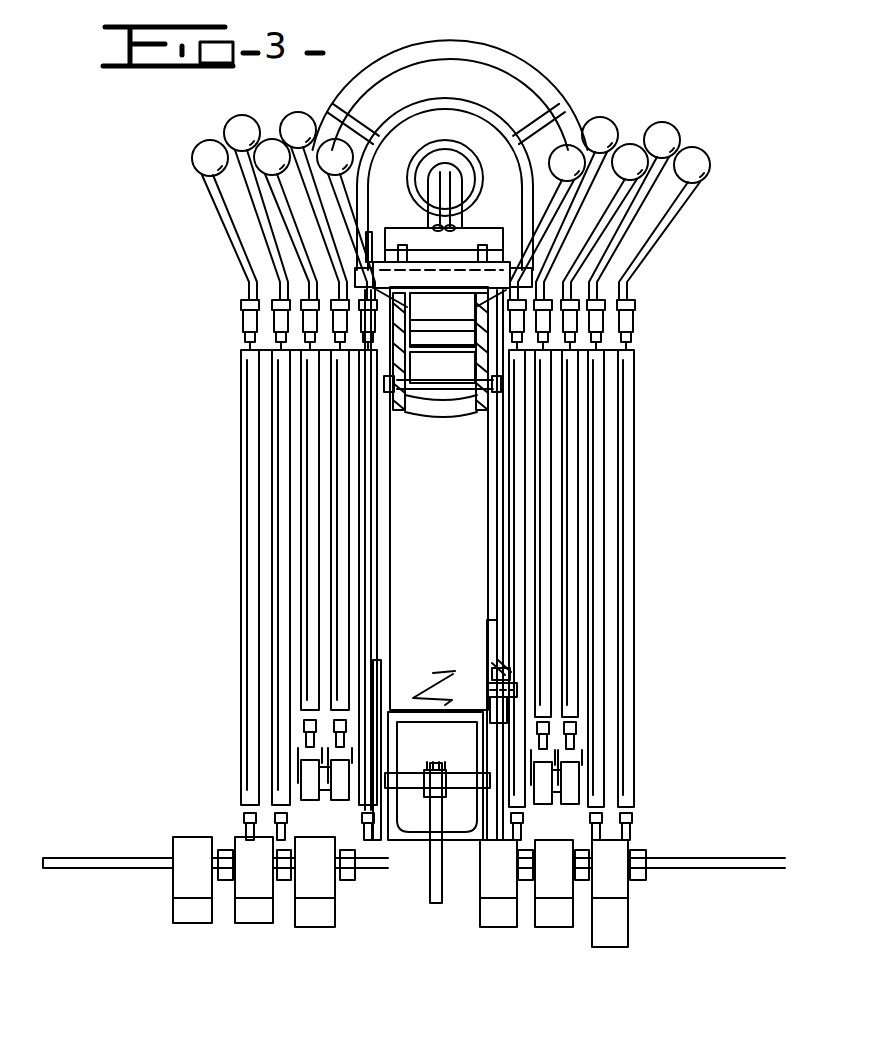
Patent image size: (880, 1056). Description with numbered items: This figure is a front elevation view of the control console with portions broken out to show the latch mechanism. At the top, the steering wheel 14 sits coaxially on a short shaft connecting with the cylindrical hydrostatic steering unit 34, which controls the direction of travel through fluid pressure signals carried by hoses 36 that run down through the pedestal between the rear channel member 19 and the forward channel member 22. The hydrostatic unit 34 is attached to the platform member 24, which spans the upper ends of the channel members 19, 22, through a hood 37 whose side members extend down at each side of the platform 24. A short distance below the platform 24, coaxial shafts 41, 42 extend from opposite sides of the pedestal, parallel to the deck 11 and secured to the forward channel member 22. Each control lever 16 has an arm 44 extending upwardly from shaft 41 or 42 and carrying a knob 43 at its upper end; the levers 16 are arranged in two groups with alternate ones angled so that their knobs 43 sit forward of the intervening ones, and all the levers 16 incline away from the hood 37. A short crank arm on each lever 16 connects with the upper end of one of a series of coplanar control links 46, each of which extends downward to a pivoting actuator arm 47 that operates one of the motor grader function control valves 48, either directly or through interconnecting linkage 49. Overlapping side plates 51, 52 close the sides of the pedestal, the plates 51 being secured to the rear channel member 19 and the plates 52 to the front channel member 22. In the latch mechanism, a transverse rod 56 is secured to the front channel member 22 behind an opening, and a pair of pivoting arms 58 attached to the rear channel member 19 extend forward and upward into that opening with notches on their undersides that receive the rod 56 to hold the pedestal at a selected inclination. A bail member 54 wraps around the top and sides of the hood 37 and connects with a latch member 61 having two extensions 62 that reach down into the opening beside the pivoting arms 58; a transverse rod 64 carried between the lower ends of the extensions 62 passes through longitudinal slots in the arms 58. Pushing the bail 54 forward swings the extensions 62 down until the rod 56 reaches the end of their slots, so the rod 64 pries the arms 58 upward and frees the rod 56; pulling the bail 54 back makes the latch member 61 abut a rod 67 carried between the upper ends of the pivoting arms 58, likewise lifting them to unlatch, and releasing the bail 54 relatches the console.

The deck 11 is at (724, 862).
The steering wheel 14 is at (344, 102).
The control lever 16 is at (226, 124).
The rear channel member 19 is at (472, 824).
The forward channel member 22 is at (455, 659).
The platform member 24 is at (518, 246).
The hydrostatic steering unit 34 is at (448, 170).
The hoses 36 is at (492, 140).
The hood 37 is at (447, 160).
The shaft 41 is at (383, 350).
The shaft 42 is at (487, 360).
The knob 43 is at (194, 162).
The arm 44 is at (666, 216).
The control link 46 is at (240, 589).
The pivoting actuator arm 47 is at (228, 850).
The function control valve 48 is at (305, 912).
The interconnecting linkage 49 is at (424, 888).
The side plate 51 is at (399, 763).
The side plate 52 is at (476, 726).
The bail member 54 is at (533, 102).
The transverse rod 56 is at (455, 300).
The pivoting arm 58 is at (462, 304).
The latch member 61 is at (436, 159).
The extension 62 is at (442, 372).
The transverse rod 64 is at (455, 358).
The rod 67 is at (467, 255).